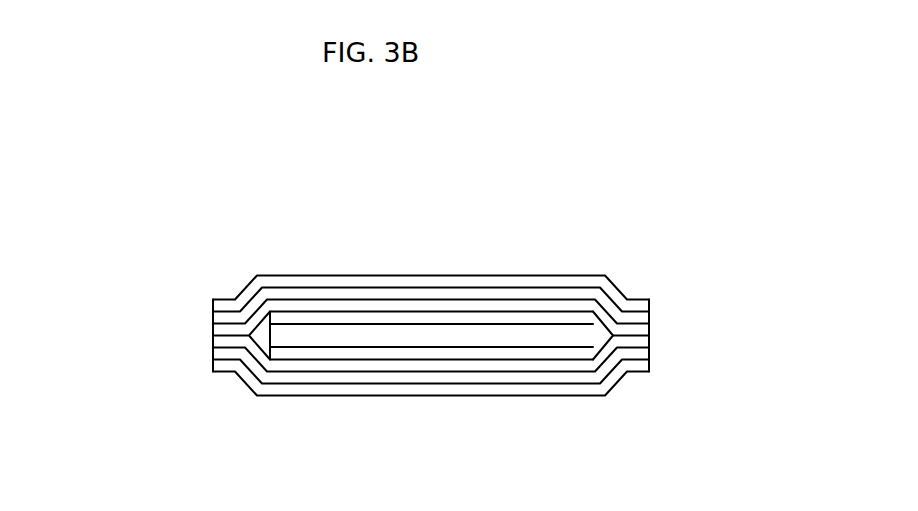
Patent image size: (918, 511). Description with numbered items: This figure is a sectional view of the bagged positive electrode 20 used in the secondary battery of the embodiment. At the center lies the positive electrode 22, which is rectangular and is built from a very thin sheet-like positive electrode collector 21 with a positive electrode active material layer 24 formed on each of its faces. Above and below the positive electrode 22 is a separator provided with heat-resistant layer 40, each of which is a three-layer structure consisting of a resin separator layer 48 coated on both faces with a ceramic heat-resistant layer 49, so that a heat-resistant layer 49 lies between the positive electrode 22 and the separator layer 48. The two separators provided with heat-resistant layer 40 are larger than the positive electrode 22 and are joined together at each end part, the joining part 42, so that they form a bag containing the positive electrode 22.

The bagged positive electrode 20 is at (152, 156).
The positive electrode collector 21 is at (362, 335).
The positive electrode 22 is at (434, 224).
The positive electrode active material layer 24 is at (315, 358).
The separator provided with heat-resistant layer 40 is at (728, 228).
The joining part 42 is at (226, 284).
The separator layer 48 is at (652, 314).
The heat-resistant layer 49 is at (652, 302).